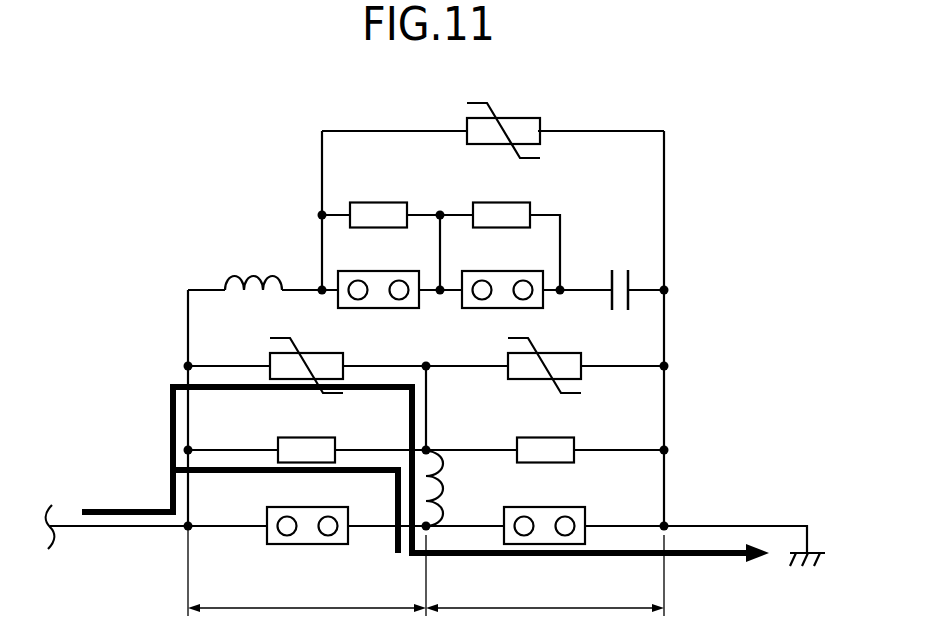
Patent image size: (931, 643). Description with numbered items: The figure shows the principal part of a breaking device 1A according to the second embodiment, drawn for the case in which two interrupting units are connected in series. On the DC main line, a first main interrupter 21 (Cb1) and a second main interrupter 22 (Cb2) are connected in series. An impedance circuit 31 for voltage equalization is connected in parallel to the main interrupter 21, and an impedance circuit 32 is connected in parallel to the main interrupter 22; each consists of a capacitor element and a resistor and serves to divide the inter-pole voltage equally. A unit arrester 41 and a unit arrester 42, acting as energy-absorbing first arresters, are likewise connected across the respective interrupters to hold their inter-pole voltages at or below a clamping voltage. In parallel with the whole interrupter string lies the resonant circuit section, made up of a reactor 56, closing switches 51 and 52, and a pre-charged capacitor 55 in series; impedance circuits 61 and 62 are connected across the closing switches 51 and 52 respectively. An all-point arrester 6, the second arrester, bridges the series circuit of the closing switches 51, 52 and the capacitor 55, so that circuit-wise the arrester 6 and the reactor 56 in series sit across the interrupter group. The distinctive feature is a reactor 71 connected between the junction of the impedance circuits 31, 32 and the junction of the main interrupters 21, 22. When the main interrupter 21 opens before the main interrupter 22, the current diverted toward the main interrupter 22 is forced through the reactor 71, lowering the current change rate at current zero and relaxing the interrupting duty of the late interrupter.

The breaking device 1A is at (713, 90).
The all-point arrester 6 is at (519, 114).
The main interrupter 21 is at (283, 509).
The main interrupter 22 is at (543, 509).
The impedance circuit 31 is at (309, 435).
The impedance circuit 32 is at (556, 435).
The unit arrester 41 is at (336, 349).
The unit arrester 42 is at (576, 349).
The closing switch 51 is at (383, 269).
The closing switch 52 is at (503, 269).
The capacitor 55 is at (615, 267).
The reactor 56 is at (250, 272).
The impedance circuit 61 is at (383, 199).
The impedance circuit 62 is at (503, 199).
The reactor 71 is at (443, 488).